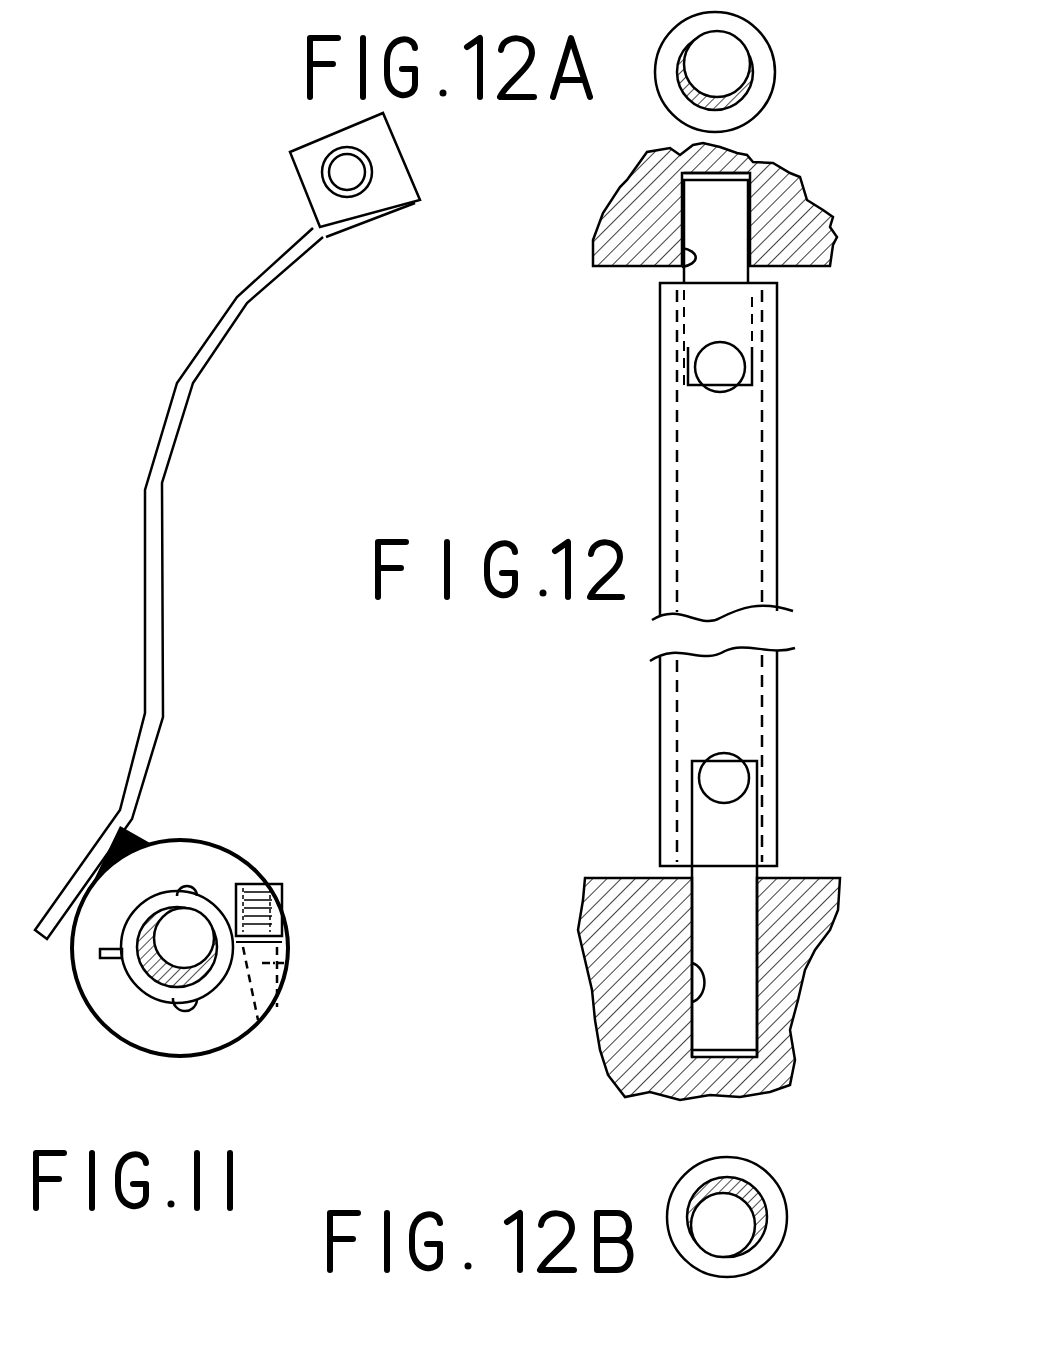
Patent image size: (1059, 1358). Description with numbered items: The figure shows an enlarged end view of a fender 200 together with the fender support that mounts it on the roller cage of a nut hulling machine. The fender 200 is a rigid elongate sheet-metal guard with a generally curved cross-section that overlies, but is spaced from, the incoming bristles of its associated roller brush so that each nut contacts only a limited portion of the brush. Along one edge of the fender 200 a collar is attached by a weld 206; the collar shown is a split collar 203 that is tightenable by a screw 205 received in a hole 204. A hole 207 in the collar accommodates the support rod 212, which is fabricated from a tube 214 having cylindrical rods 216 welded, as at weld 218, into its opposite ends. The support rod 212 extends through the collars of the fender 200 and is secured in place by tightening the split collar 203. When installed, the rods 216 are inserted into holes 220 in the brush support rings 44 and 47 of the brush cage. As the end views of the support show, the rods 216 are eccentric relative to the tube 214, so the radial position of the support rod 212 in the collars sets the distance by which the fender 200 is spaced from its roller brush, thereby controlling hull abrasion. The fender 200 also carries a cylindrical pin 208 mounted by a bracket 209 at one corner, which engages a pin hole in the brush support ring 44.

In FIG. 11, the fender 200 is at (143, 477).
In FIG. 11, the split collar 203 is at (283, 905).
In FIG. 11, the hole 204 is at (260, 983).
In FIG. 11, the screw 205 is at (275, 963).
In FIG. 11, the weld 206 is at (133, 833).
In FIG. 11, the hole 207 is at (197, 897).
In FIG. 11, the cylindrical pin 208 is at (332, 146).
In FIG. 11, the bracket 209 is at (297, 162).
In FIG. 11, the support rod 212 is at (260, 873).
In FIG. 12, the support rod 212 is at (647, 502).
In FIG. 12A, the support rod 212 is at (646, 90).
In FIG. 12B, the support rod 212 is at (668, 1187).
In FIG. 11, the tube 214 is at (227, 998).
In FIG. 12, the tube 214 is at (657, 440).
In FIG. 12A, the tube 214 is at (673, 107).
In FIG. 11, the cylindrical rod 216 is at (190, 946).
In FIG. 12, the cylindrical rod 216 is at (697, 311).
In FIG. 12A, the cylindrical rod 216 is at (725, 55).
In FIG. 12, the weld 218 is at (673, 341).
In FIG. 12A, the weld 218 is at (730, 100).
In FIG. 12, the hole 220 is at (697, 266).
In FIG. 12, the brush support ring 44 is at (597, 226).
In FIG. 12, the brush support ring 47 is at (585, 921).